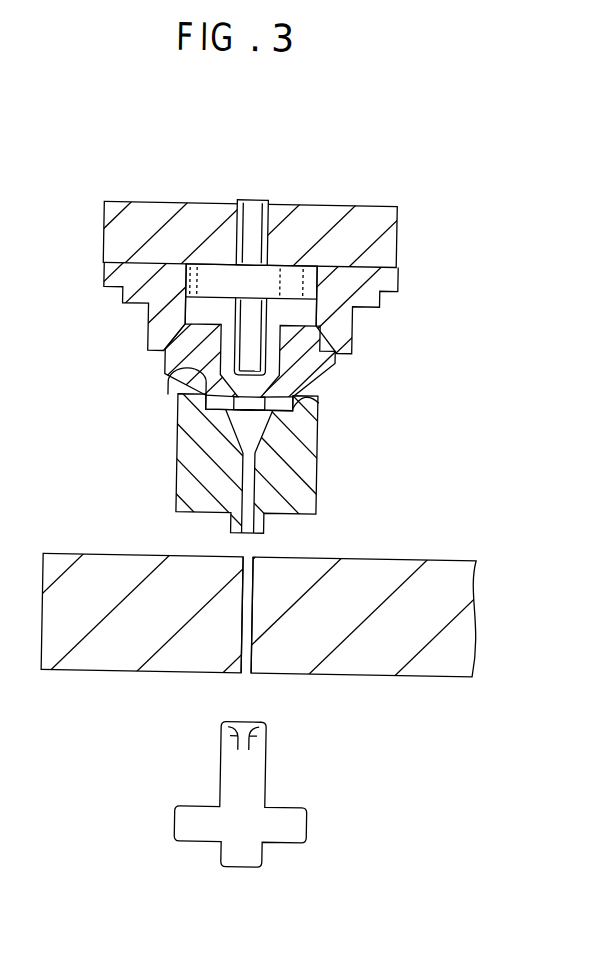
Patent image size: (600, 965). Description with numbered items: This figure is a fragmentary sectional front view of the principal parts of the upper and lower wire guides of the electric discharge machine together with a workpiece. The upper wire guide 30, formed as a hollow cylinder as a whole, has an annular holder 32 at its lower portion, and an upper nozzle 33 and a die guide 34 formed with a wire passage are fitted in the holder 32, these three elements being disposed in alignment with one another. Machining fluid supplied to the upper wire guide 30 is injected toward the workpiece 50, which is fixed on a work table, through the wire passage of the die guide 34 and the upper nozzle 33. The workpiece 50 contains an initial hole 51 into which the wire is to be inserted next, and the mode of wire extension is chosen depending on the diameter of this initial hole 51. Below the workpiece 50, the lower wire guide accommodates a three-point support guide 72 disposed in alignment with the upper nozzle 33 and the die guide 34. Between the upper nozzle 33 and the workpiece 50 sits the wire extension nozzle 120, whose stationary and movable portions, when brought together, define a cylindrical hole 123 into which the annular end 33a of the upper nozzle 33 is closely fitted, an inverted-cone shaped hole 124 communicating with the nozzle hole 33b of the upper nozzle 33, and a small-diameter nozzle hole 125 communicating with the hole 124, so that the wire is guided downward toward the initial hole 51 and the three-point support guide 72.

The upper wire guide 30 is at (433, 195).
The annular holder 32 is at (394, 277).
The upper nozzle 33 is at (333, 371).
The annular end 33a is at (282, 403).
The nozzle hole 33b is at (260, 411).
The die guide 34 is at (260, 200).
The workpiece 50 is at (90, 660).
The initial hole 51 is at (250, 644).
The three-point support guide 72 is at (297, 826).
The wire extension nozzle 120 is at (174, 481).
The cylindrical hole 123 is at (204, 395).
The inverted-cone shaped hole 124 is at (243, 432).
The nozzle hole 125 is at (243, 464).